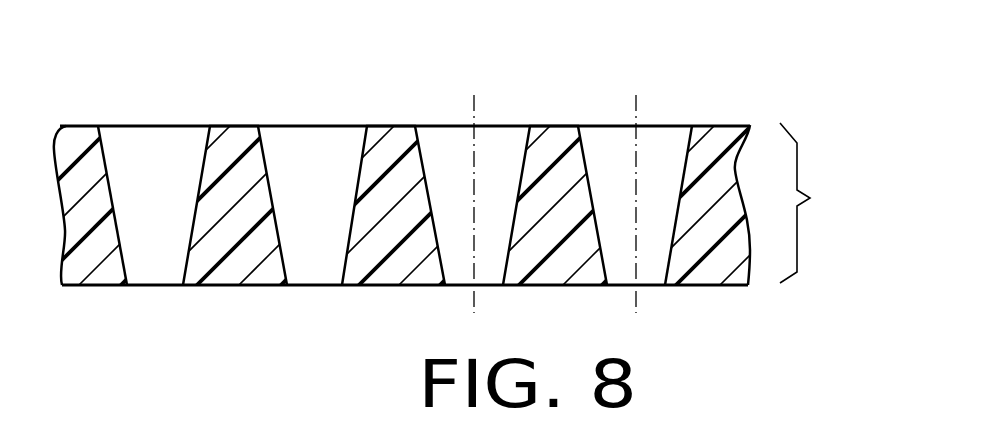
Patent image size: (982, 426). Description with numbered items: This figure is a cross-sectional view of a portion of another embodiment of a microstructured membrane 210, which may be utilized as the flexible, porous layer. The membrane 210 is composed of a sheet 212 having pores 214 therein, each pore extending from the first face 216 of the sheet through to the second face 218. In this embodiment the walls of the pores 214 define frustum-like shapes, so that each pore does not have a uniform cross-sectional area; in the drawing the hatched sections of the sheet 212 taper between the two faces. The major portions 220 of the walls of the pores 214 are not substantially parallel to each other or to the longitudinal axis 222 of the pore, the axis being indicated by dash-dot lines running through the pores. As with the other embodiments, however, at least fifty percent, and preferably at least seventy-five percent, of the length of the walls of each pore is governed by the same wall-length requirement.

The membrane 210 is at (443, 183).
The sheet 212 is at (227, 147).
The pores 214 is at (337, 153).
The first face 216 is at (77, 140).
The second face 218 is at (232, 288).
The major portions 220 is at (821, 203).
The longitudinal axis 222 is at (635, 165).